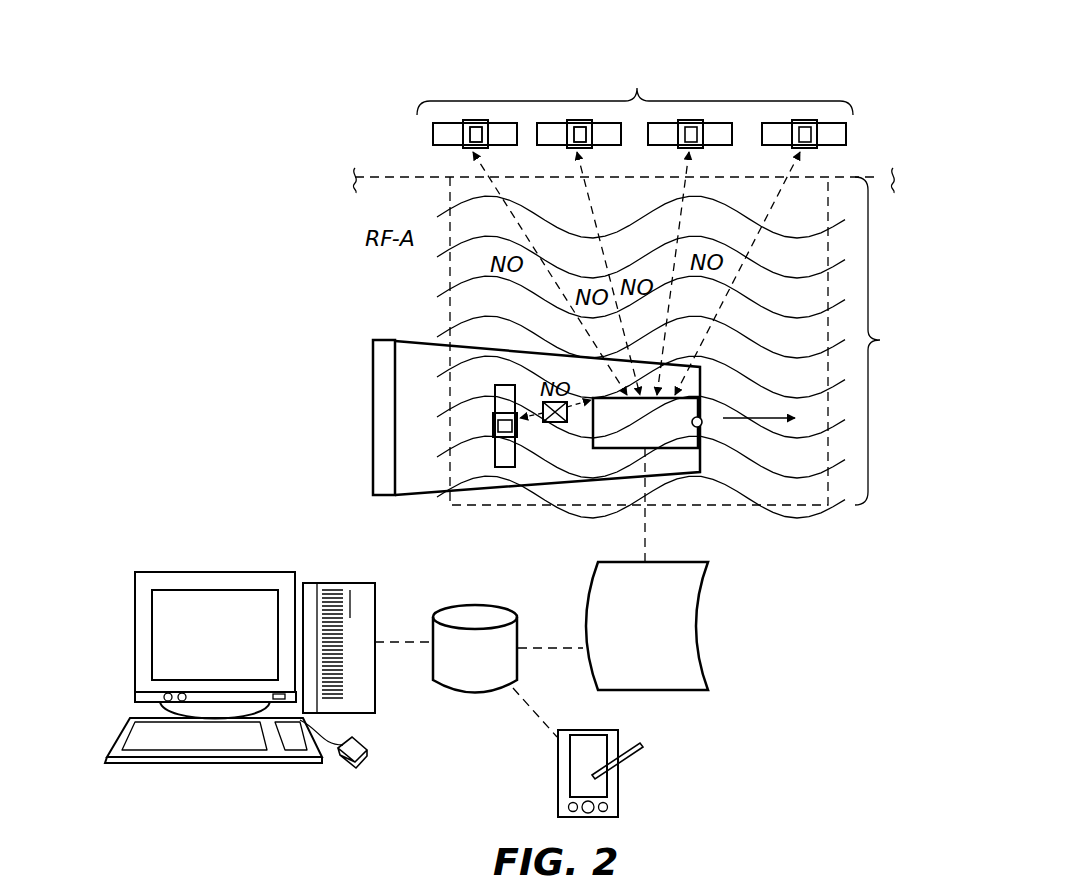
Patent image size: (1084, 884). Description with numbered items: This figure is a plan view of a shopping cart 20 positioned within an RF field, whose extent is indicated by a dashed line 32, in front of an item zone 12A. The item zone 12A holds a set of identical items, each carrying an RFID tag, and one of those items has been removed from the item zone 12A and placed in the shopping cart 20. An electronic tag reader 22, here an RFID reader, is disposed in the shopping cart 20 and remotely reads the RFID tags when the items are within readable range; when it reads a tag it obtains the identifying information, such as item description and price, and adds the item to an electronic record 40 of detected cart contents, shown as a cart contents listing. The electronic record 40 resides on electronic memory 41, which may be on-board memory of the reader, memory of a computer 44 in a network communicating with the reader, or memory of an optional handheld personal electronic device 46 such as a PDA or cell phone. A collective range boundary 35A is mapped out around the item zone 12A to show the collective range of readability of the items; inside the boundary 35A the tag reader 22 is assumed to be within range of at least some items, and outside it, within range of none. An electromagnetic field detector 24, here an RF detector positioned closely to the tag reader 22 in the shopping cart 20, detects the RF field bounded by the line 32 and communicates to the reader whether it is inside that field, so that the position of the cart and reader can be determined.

The item zone 12A is at (635, 91).
The RF field boundary 32 is at (878, 177).
The collective range boundary 35A is at (896, 341).
The shopping cart 20 is at (373, 344).
The electronic tag reader 22 is at (676, 447).
The electromagnetic field detector 24 is at (703, 424).
The electronic record 40 is at (708, 633).
The electronic memory 41 is at (475, 692).
The computer 44 is at (226, 556).
The personal electronic device 46 is at (618, 778).